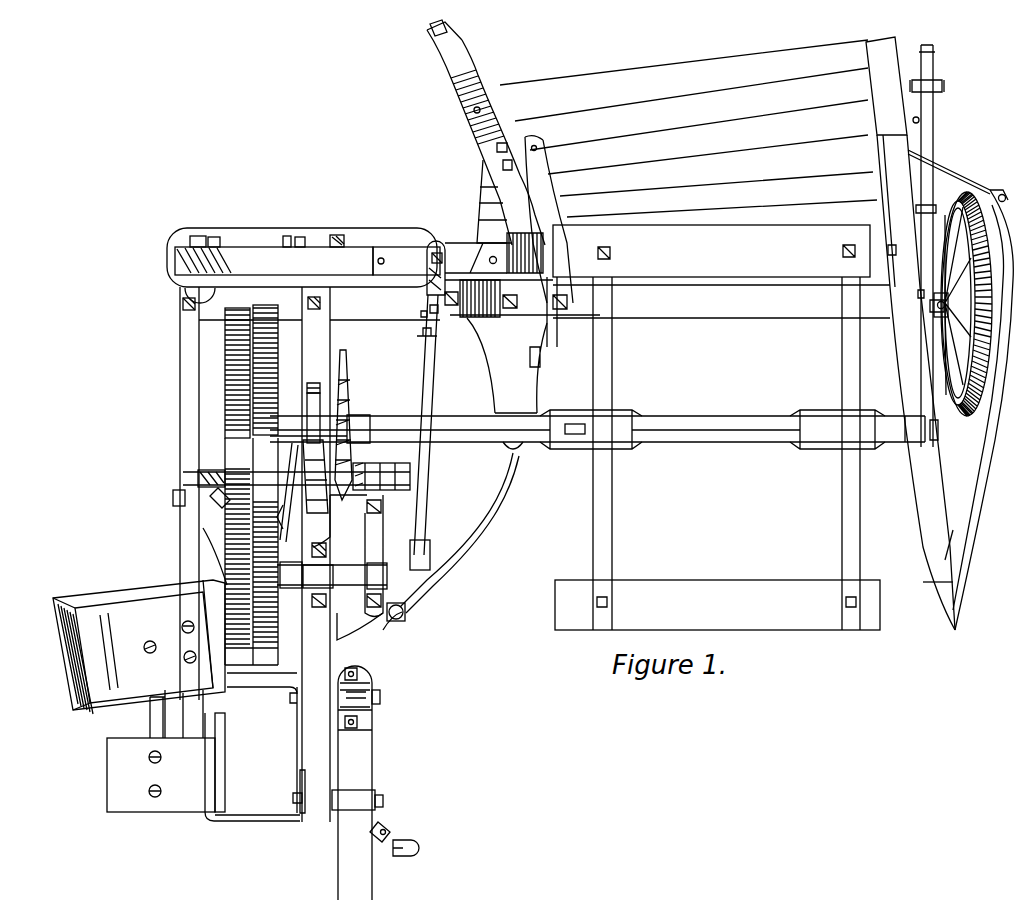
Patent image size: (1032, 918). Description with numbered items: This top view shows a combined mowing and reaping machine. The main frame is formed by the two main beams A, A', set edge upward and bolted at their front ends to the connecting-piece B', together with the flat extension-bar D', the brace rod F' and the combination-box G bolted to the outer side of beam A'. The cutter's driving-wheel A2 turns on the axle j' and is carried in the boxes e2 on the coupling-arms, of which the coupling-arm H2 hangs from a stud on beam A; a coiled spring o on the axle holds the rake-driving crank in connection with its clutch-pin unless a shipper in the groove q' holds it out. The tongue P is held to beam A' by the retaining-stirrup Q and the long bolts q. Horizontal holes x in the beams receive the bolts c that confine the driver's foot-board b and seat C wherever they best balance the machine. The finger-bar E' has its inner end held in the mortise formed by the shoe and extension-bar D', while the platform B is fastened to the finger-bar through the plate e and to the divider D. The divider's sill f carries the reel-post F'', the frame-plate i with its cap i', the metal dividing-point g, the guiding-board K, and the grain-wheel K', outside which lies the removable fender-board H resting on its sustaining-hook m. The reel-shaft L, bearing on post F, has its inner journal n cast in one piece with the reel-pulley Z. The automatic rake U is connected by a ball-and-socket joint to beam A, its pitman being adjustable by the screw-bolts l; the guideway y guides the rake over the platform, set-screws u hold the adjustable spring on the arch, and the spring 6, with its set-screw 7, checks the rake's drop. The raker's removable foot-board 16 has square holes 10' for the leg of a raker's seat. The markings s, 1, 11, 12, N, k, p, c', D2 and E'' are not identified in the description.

The raker's foot-board 16 is at (302, 257).
The pulley s is at (200, 293).
The square hole 10' is at (290, 241).
The bolt 1 is at (277, 242).
The automatic rake U is at (440, 268).
The main beam A is at (184, 512).
The main beam A' is at (310, 554).
The extension-bar D' is at (319, 364).
The cutter's driving-wheel A2 is at (251, 551).
The boxes e2 is at (291, 484).
The groove q' is at (381, 470).
The coupling-arm H2 is at (215, 556).
The plate e is at (292, 492).
The screw-bolts l is at (281, 517).
The inner end journal n is at (313, 400).
The brace rod F' is at (315, 453).
The reel-pulley Z is at (348, 425).
The combination-box G is at (332, 567).
The axle j' is at (418, 432).
The nut 12 is at (423, 328).
The nut 11 is at (419, 313).
The reel-post F is at (451, 541).
The reel-shaft L is at (604, 429).
The horizontal holes x is at (486, 146).
The driver's foot-board b is at (479, 113).
The guideway y is at (508, 135).
The bolts c is at (549, 241).
The spring 6 is at (522, 364).
The platform B is at (688, 128).
The sill f is at (893, 162).
The reel-post F'' is at (898, 242).
The finger-bar E' is at (730, 251).
The frame beam E'' is at (721, 453).
The post N is at (927, 246).
The coiled spring o is at (913, 125).
The grain-wheel K' is at (966, 304).
The hub k is at (931, 305).
The frame-plate i is at (914, 294).
The fender-board H is at (983, 410).
The sustaining-hook m is at (949, 172).
The guiding-board K is at (922, 458).
The divider D is at (935, 458).
The cap i' is at (944, 545).
The dividing-point g is at (938, 592).
The seat C is at (139, 647).
The set-screw 7 is at (166, 762).
The set-screws u is at (162, 717).
The cross bar D2 is at (262, 683).
The connecting-piece B' is at (252, 767).
The tongue P is at (378, 783).
The band p is at (355, 695).
The lug c' is at (380, 697).
The retaining-stirrup Q is at (353, 800).
The long bolts q is at (382, 801).